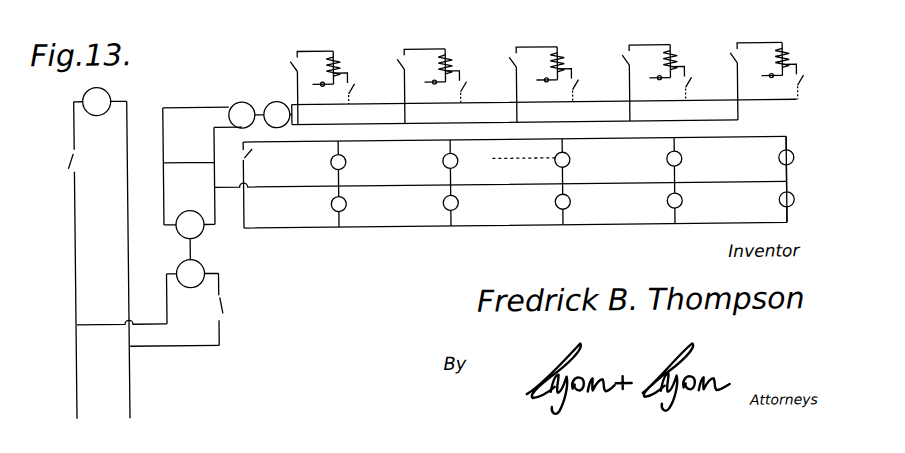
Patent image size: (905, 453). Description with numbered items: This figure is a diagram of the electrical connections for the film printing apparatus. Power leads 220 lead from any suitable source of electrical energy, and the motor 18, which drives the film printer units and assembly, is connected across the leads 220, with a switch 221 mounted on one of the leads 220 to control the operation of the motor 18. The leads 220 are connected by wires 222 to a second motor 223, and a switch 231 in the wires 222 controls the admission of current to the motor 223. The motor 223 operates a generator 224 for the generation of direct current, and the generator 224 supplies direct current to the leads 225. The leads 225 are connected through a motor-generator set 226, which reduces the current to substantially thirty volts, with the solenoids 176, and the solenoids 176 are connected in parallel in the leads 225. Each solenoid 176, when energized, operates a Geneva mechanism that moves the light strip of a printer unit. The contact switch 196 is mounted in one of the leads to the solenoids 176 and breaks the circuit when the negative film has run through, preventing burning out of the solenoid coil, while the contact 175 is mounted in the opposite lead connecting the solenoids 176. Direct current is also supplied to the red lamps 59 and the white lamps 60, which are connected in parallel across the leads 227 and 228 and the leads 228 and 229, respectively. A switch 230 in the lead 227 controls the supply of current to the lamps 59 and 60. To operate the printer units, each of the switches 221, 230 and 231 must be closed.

The motor 18 is at (95, 114).
The red lamp 59 is at (331, 164).
The white lamp 60 is at (330, 205).
The stationary contact 175 is at (356, 93).
The solenoid 176 is at (341, 50).
The contact switch 196 is at (289, 57).
The power leads 220 is at (74, 372).
The switch 221 is at (67, 169).
The wires 222 is at (182, 343).
The second motor 223 is at (203, 269).
The generator 224 is at (175, 233).
The leads 225 is at (214, 139).
The motor-generator set 226 is at (259, 108).
The lead 227 is at (381, 143).
The lead 228 is at (378, 188).
The lead 229 is at (385, 229).
The switch 230 is at (254, 152).
The switch 231 is at (226, 310).